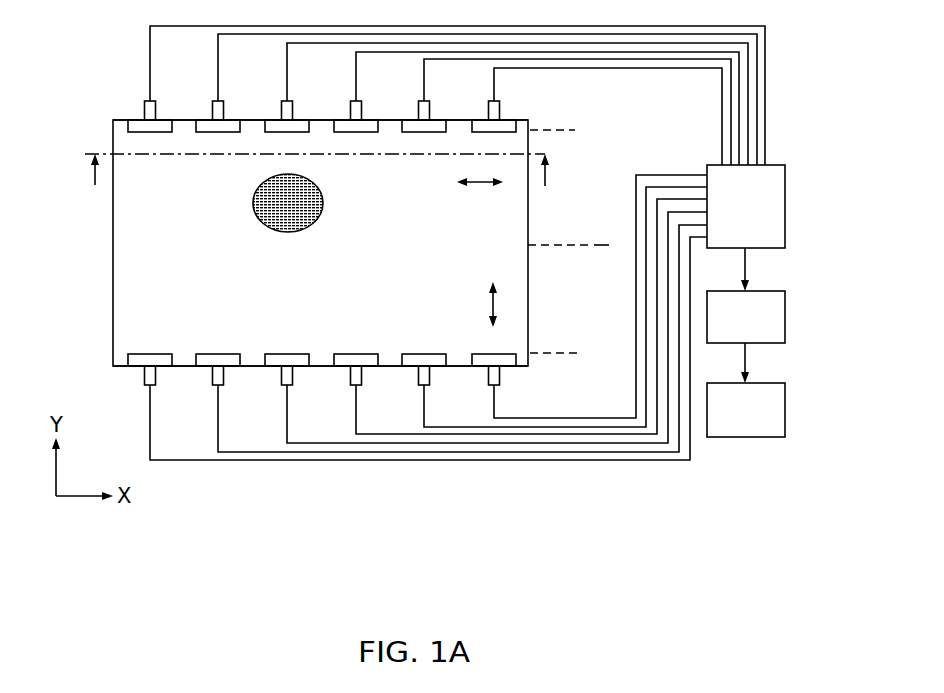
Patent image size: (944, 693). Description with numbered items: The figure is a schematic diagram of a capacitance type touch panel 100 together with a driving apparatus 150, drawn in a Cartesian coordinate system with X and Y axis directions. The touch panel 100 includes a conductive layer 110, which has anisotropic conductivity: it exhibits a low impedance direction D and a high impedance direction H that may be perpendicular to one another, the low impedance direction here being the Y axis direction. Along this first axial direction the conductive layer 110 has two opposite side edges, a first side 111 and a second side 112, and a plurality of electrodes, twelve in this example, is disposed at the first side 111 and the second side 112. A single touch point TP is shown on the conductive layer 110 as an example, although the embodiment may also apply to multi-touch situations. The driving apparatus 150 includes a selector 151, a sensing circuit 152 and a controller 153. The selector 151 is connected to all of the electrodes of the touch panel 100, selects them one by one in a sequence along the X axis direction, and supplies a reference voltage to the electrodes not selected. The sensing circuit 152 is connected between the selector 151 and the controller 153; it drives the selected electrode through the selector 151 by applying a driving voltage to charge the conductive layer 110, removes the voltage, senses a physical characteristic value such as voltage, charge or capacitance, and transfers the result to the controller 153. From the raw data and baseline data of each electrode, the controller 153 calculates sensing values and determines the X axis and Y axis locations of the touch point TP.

The capacitance type touch panel 100 is at (263, 476).
The conductive layer 110 is at (113, 243).
The first side 111 is at (528, 366).
The second side 112 is at (528, 120).
The driving apparatus 150 is at (735, 466).
The selector 151 is at (775, 165).
The sensing circuit 152 is at (775, 291).
The controller 153 is at (775, 383).
The touch point TP is at (253, 202).